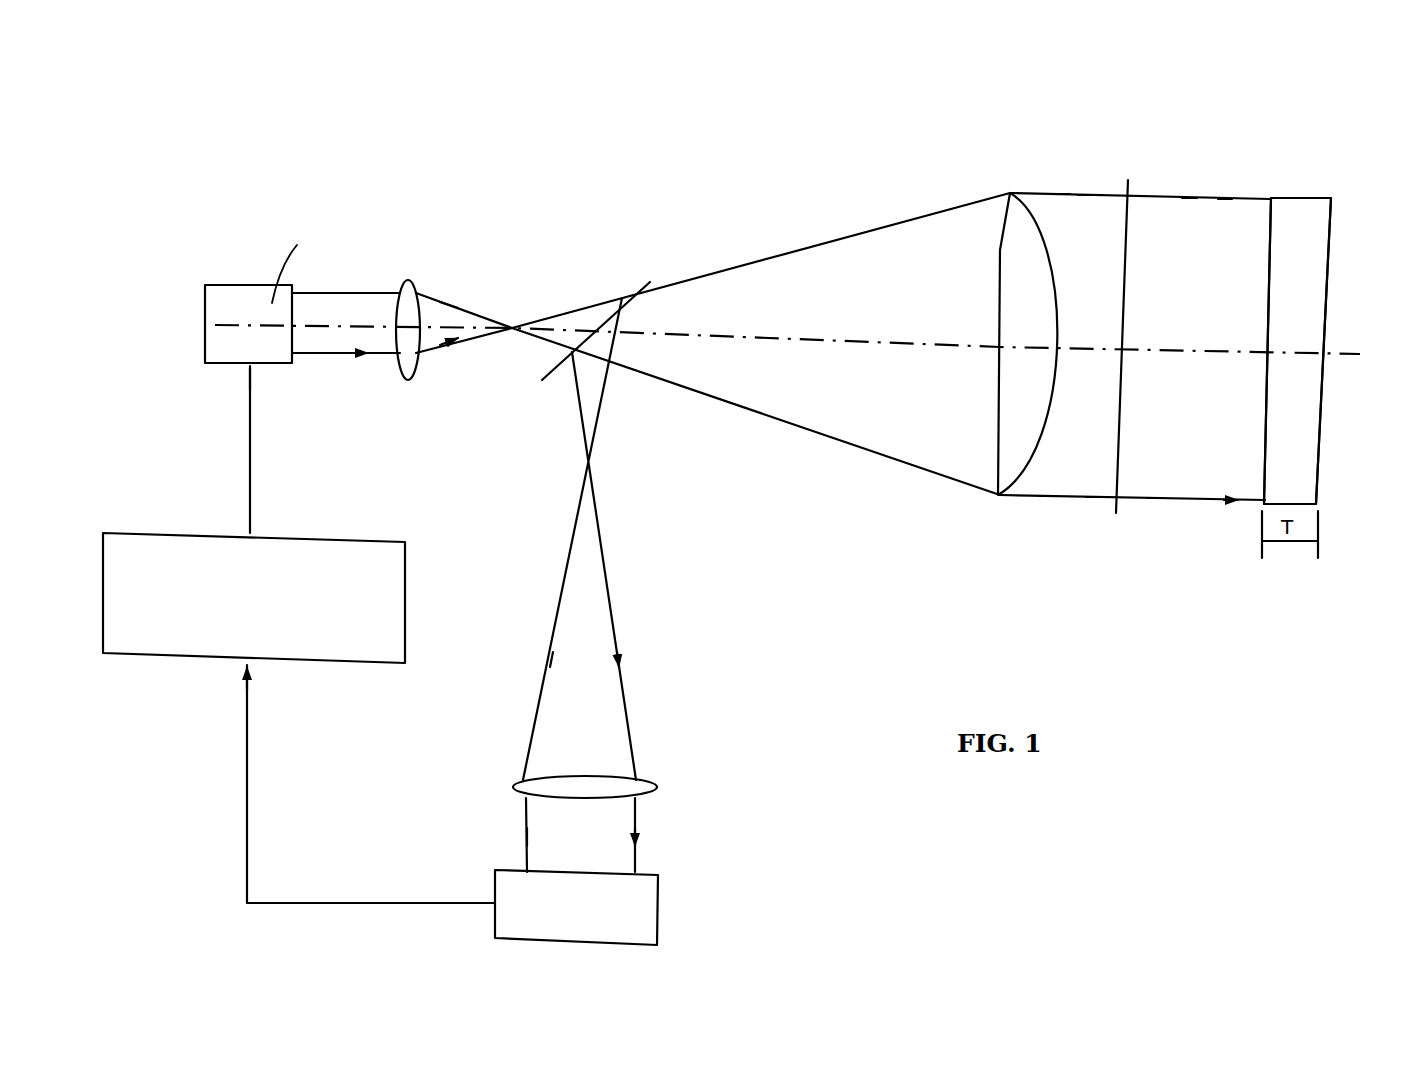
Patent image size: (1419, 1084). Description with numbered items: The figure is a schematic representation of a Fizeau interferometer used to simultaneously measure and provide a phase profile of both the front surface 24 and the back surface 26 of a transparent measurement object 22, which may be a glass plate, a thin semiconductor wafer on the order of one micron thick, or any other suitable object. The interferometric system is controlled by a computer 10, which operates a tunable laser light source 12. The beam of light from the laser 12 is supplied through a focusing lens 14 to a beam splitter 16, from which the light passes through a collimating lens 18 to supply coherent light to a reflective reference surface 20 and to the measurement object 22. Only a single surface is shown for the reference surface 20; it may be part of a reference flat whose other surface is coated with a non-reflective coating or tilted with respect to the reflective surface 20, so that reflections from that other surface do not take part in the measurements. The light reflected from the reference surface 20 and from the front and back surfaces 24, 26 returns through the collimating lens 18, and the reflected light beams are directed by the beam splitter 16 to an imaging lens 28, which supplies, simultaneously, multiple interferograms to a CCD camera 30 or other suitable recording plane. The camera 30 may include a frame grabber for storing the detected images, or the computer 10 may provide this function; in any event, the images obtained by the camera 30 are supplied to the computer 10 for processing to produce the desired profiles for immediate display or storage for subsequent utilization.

The computer 10 is at (311, 660).
The tunable laser light source 12 is at (308, 424).
The focusing lens 14 is at (420, 290).
The beam splitter 16 is at (624, 287).
The collimating lens 18 is at (1002, 262).
The reflective reference surface 20 is at (1124, 327).
The transparent measurement object 22 is at (1294, 227).
The front surface 24 is at (1195, 308).
The back surface 26 is at (1328, 323).
The imaging lens 28 is at (618, 797).
The CCD camera 30 is at (648, 900).